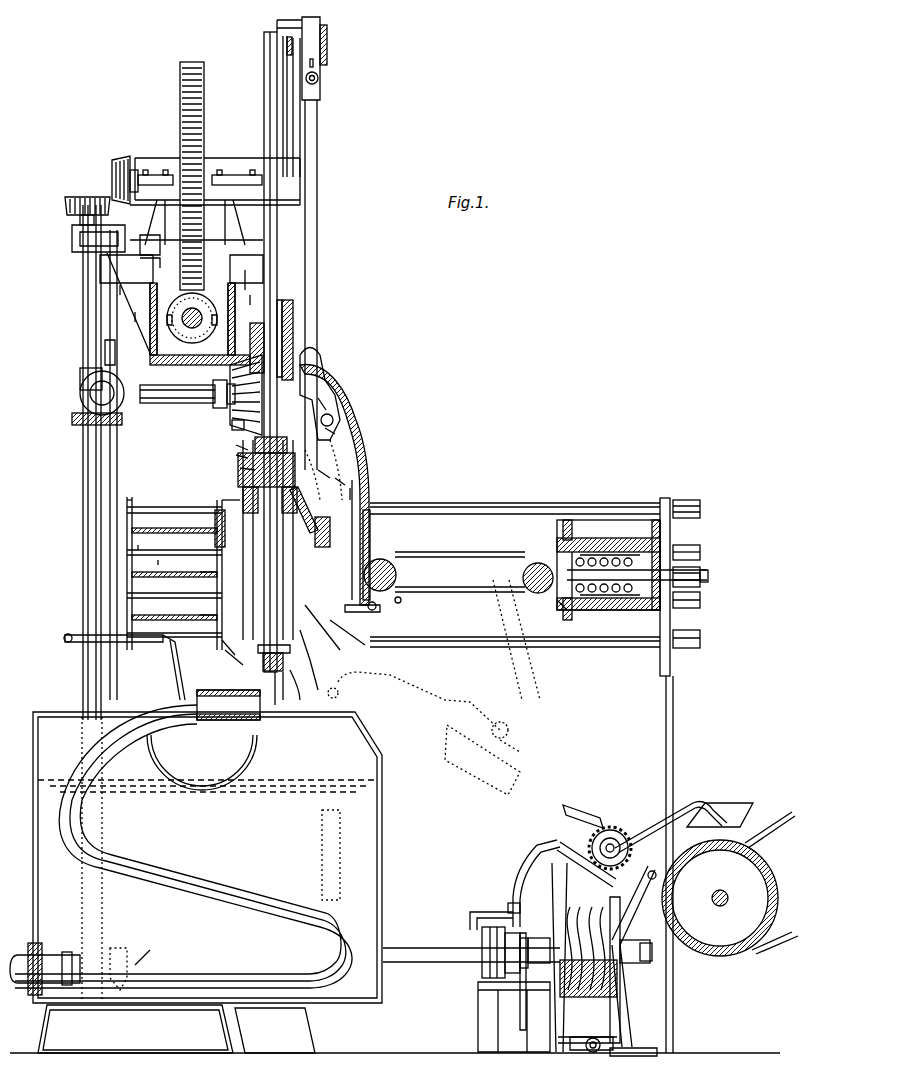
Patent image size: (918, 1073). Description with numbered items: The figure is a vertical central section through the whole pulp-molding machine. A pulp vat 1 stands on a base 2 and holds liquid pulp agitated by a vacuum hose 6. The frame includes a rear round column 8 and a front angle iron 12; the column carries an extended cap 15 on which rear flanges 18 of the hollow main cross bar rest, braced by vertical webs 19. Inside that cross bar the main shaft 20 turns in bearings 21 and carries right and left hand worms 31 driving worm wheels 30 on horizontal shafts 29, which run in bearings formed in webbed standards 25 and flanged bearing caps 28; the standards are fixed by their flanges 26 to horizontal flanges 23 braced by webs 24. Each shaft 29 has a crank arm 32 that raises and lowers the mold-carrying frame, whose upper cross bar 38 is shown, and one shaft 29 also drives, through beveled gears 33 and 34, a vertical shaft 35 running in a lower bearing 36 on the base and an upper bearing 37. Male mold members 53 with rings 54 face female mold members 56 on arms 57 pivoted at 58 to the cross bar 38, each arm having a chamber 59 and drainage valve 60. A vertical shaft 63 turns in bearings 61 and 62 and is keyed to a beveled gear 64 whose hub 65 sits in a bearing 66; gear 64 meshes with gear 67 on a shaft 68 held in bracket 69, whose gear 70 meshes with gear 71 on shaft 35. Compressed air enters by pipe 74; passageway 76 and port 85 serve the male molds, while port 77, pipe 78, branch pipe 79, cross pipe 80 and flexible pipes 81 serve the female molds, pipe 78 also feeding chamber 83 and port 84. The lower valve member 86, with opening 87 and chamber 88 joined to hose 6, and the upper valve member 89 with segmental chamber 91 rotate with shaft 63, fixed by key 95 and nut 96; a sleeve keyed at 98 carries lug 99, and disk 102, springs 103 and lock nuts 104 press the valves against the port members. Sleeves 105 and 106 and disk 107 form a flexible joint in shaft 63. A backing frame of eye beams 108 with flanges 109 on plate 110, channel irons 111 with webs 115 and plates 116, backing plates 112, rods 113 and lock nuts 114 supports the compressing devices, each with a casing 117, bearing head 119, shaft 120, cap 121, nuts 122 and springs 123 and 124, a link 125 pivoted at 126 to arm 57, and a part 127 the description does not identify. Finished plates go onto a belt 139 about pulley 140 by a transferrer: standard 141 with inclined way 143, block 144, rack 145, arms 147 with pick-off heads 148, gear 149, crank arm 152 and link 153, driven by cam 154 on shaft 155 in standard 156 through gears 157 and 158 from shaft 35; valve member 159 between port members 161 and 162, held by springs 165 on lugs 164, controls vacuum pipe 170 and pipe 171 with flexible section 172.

The pulp vat 1 is at (385, 805).
The base 2 is at (308, 1033).
The vacuum hose 6 is at (222, 882).
The round column 8 is at (110, 541).
The angle iron 12 is at (674, 735).
The extended cap 15 is at (80, 380).
The laterally projecting flanges 18 is at (113, 360).
The vertical webs 19 is at (110, 305).
The main shaft 20 is at (203, 330).
The bearings 21 is at (180, 328).
The horizontal flanges 23 is at (250, 280).
The vertical webs 24 is at (255, 300).
The vertical webbed standards 25 is at (235, 222).
The horizontal outward extending flanges 26 is at (320, 245).
The flanged bearing caps 28 is at (150, 172).
The horizontal shaft 29 is at (310, 175).
The worm wheels 30 is at (232, 92).
The right and left hand worms 31 is at (204, 305).
The crank arms 32 is at (296, 125).
The beveled gear 33 is at (122, 160).
The beveled gear 34 is at (88, 197).
The vertical shaft 35 is at (85, 460).
The lower bearing 36 is at (108, 1015).
The upper bearing 37 is at (80, 240).
The cross bar 38 is at (318, 390).
The mold-receiving members 53 is at (360, 642).
The ring or raised ledge 54 is at (338, 648).
The opposing mold members 56 is at (358, 612).
The arm 57 is at (355, 488).
The pivot 58 is at (333, 416).
The hollow chamber 59 is at (409, 599).
The drainage valves 60 is at (376, 606).
The bearing 61 is at (285, 660).
The bearing 62 is at (222, 500).
The vertical shaft 63 is at (268, 52).
The beveled gear 64 is at (300, 355).
The hub 65 is at (295, 340).
The bearing 66 is at (293, 325).
The beveled gear 67 is at (228, 410).
The shaft 68 is at (200, 408).
The bracket 69 is at (215, 392).
The beveled gear 70 is at (82, 399).
The beveled gear 71 is at (74, 420).
The pipe 74 is at (160, 650).
The passageway 76 is at (370, 510).
The port 77 is at (240, 485).
The pipe 78 is at (218, 570).
The branch pipe 79 is at (358, 496).
The cross pipe 80 is at (340, 460).
The flexible connecting pipes 81 is at (345, 478).
The chamber 83 is at (218, 612).
The port 84 is at (222, 645).
The second port 85 is at (312, 650).
The lower valve member 86 is at (226, 662).
The extended opening 87 is at (290, 675).
The large chamber 88 is at (286, 690).
The upper valve member 89 is at (312, 456).
The extended segmental chamber 91 is at (330, 470).
The key 95 is at (278, 700).
The nut 96 is at (268, 700).
The key 98 is at (336, 428).
The depending lug 99 is at (240, 469).
The disk or washer 102 is at (236, 447).
The springs 103 is at (236, 457).
The lock nuts 104 is at (256, 444).
The sleeve 105 is at (305, 372).
The sleeve 106 is at (232, 426).
The intermediate disk 107 is at (326, 402).
The eye beams 108 is at (160, 560).
The rear flanges 109 is at (140, 545).
The heavy plate 110 is at (131, 500).
The channel irons 111 is at (575, 512).
The backing plates 112 is at (672, 545).
The heavy rods 113 is at (440, 555).
The lock nuts 114 is at (692, 500).
The horizontal webs 115 is at (628, 550).
The heavy steel plates 116 is at (604, 550).
The cylindrical casing 117 is at (560, 610).
The bearing head 119 is at (555, 560).
The extended shaft 120 is at (706, 572).
The cap 121 is at (700, 610).
The adjusting nuts 122 is at (700, 580).
The coiled spring 123 is at (582, 606).
The coiled spring 124 is at (580, 550).
The link 125 is at (538, 692).
The pivot 126 is at (530, 560).
The bracket 127 is at (396, 560).
The endless belt 139 is at (778, 810).
The pulley 140 is at (755, 858).
The vertical standard 141 is at (630, 1000).
The inclined ways 143 is at (575, 805).
The blocks 144 is at (620, 830).
The rack 145 is at (560, 842).
The hollow transferrer arms 147 is at (688, 800).
The pick-off heads 148 is at (728, 803).
The gear 149 is at (612, 827).
The crank arm 152 is at (640, 915).
The links 153 is at (630, 840).
The grooved cam 154 is at (583, 1050).
The shaft 155 is at (405, 950).
The standard 156 is at (485, 1040).
The beveled gear 157 is at (122, 946).
The beveled gear 158 is at (150, 950).
The central valve member 159 is at (512, 933).
The port member 161 is at (485, 930).
The port member 162 is at (548, 922).
The apertured lugs 164 is at (482, 960).
The coiled springs 165 is at (508, 905).
The pipe 170 is at (470, 1000).
The pipe 171 is at (470, 910).
The flexible section 172 is at (520, 860).